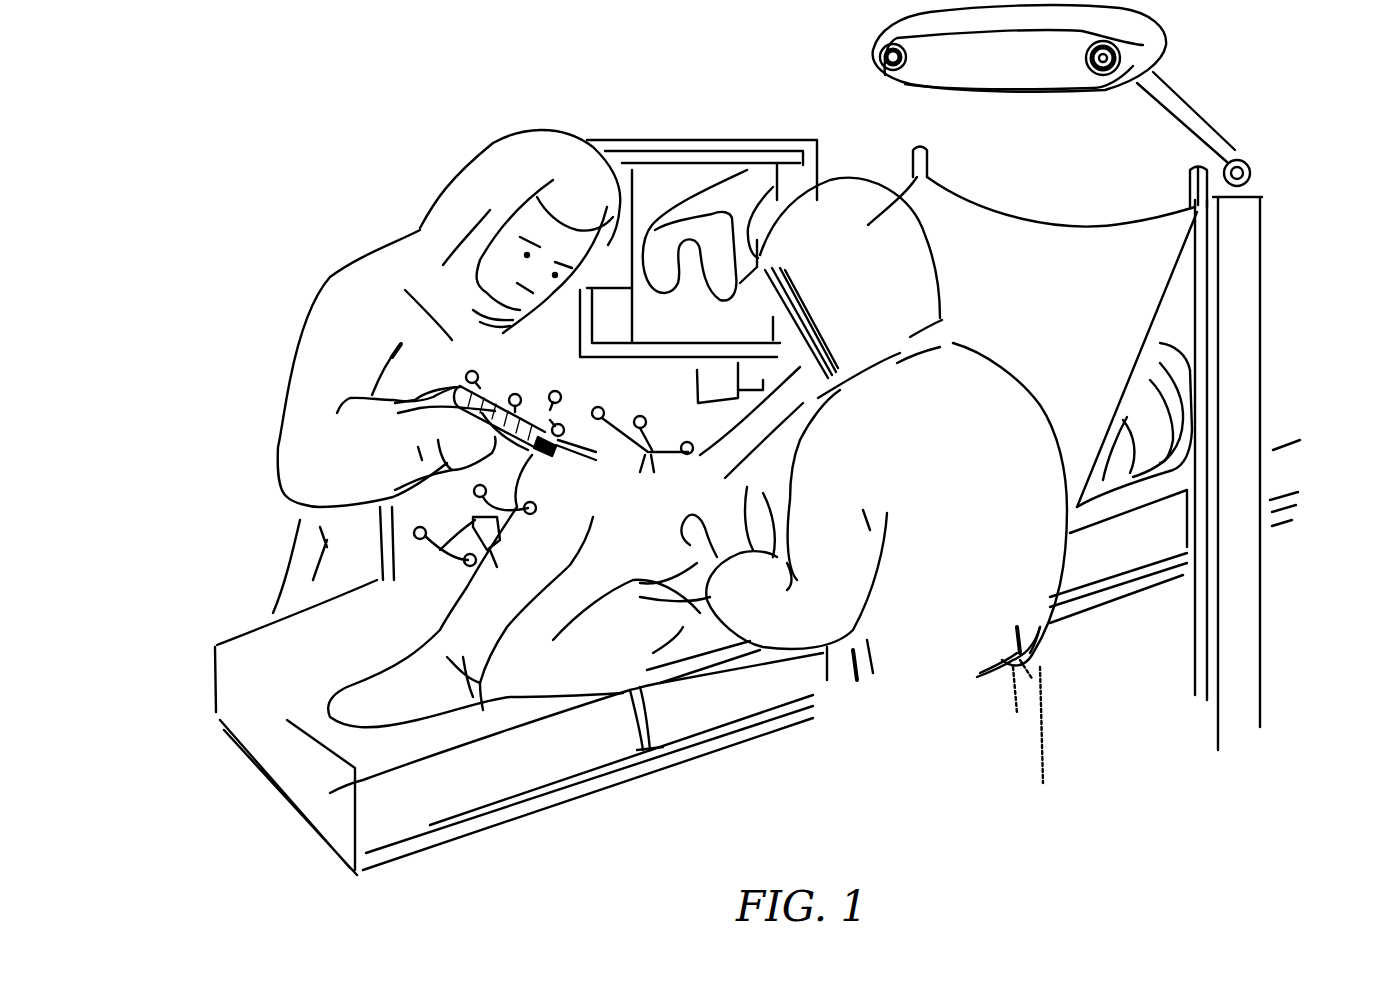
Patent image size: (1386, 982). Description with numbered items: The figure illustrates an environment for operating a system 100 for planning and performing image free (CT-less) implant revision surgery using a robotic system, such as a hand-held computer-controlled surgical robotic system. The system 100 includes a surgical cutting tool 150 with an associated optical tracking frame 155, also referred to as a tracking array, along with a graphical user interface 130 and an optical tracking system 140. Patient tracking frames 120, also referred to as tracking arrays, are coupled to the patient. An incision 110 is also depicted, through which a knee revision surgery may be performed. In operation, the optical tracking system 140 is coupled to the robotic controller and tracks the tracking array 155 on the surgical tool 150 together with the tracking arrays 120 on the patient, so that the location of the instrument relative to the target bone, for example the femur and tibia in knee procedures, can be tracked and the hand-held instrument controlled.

The system 100 is at (186, 108).
The incision 110 is at (547, 470).
The patient tracking frames 120 is at (642, 454).
The graphical user interface 130 is at (667, 183).
The optical tracking system 140 is at (1137, 37).
The surgical cutting tool 150 is at (460, 393).
The optical tracking frame 155 is at (547, 448).